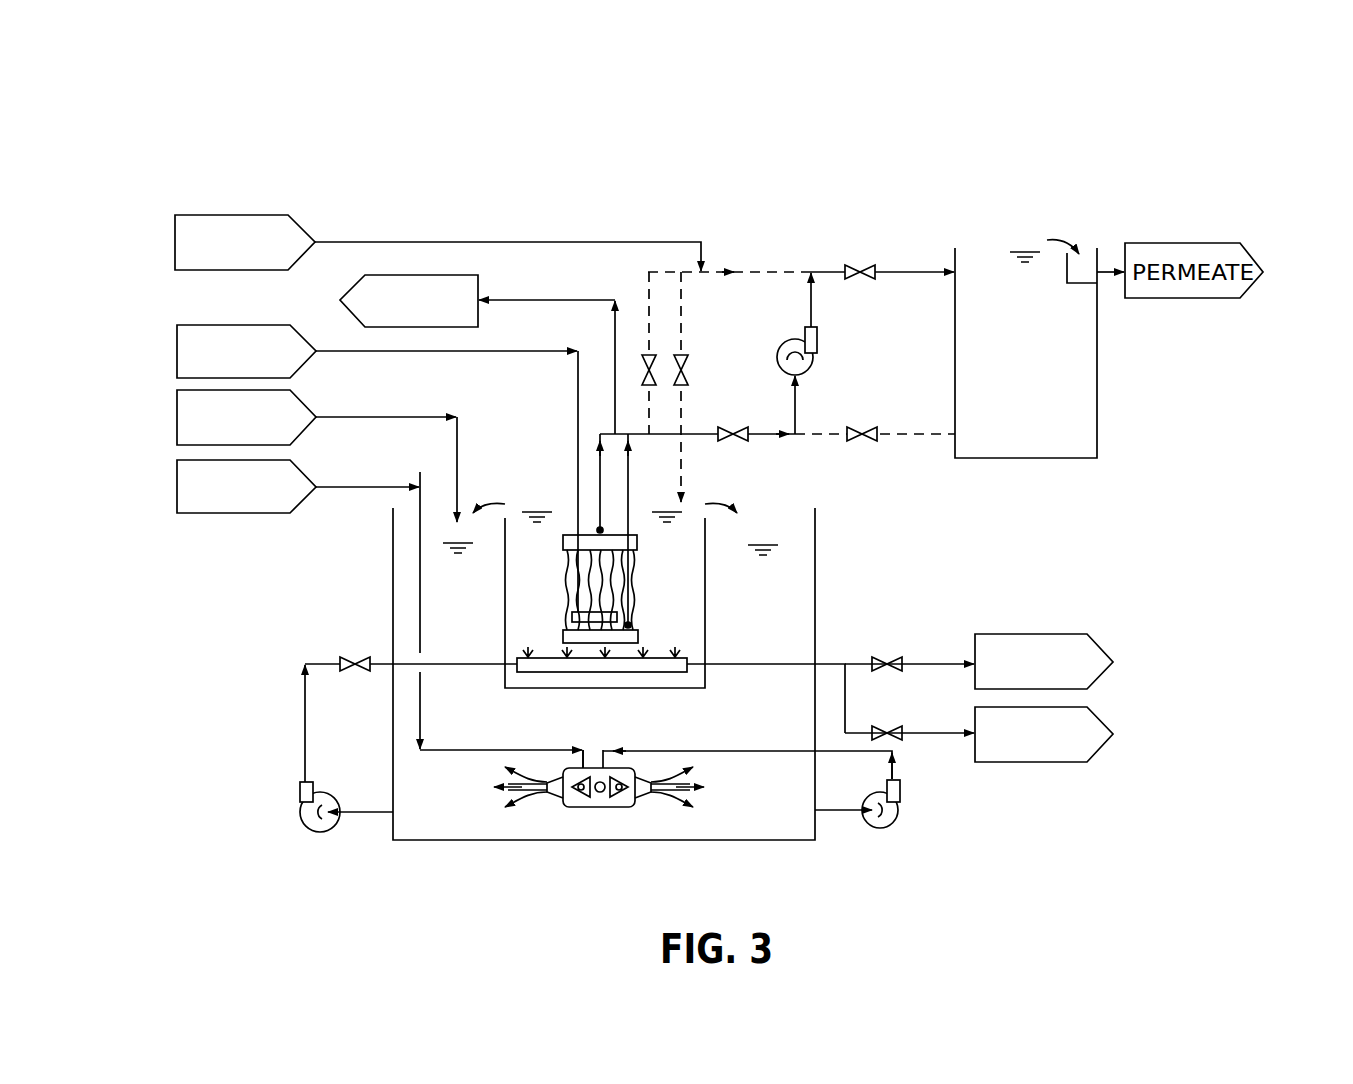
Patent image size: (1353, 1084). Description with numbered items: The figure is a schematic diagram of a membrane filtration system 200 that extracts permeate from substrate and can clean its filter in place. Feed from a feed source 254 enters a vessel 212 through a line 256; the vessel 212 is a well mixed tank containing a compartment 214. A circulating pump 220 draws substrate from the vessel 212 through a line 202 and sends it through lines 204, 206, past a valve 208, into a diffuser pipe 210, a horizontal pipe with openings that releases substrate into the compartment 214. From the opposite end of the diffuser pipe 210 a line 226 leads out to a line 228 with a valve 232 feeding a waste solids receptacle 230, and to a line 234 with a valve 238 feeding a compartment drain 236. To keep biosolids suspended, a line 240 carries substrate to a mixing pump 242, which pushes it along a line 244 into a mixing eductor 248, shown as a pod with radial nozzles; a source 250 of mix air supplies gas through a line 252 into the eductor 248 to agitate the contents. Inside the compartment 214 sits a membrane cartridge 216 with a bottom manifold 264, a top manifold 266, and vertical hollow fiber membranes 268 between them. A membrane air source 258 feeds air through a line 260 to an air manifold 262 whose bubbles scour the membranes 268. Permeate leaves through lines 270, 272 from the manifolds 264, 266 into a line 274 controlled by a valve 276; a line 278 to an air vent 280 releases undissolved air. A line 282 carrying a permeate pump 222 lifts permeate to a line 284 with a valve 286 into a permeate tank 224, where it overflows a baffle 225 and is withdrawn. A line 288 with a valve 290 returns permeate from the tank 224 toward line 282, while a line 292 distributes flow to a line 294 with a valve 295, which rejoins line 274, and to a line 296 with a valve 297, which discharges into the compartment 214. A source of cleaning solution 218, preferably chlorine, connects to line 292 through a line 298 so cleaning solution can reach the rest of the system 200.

The system 200 is at (1266, 194).
The line 202 is at (362, 815).
The line 204 is at (303, 730).
The line 206 is at (305, 662).
The valve 208 is at (353, 657).
The diffuser pipe 210 is at (625, 673).
The vessel 212 is at (816, 525).
The compartment 214 is at (707, 650).
The membrane cartridge 216 is at (632, 572).
The source of cleaning solution 218 is at (245, 242).
The circulating pump 220 is at (298, 823).
The permeate pump 222 is at (814, 349).
The permeate tank 224 is at (1039, 353).
The baffle 225 is at (1082, 286).
The line 226 is at (765, 667).
The line 228 is at (938, 660).
The waste solids receptacle 230 is at (1044, 661).
The valve 232 is at (884, 657).
The line 234 is at (934, 736).
The compartment drain 236 is at (1044, 734).
The valve 238 is at (875, 742).
The line 240 is at (840, 813).
The mixing pump 242 is at (900, 818).
The line 244 is at (753, 754).
The mixing eductor 248 is at (598, 808).
The source of mix air 250 is at (246, 486).
The line 252 is at (421, 585).
The feed source 254 is at (246, 417).
The line 256 is at (460, 430).
The membrane air source 258 is at (246, 351).
The line 260 is at (577, 378).
The air manifold 262 is at (572, 614).
The bottom manifold 264 is at (563, 636).
The top manifold 266 is at (638, 543).
The hollow fiber membranes 268 is at (633, 594).
The line 270 is at (630, 468).
The line 272 is at (598, 470).
The line 274 is at (663, 432).
The valve 276 is at (745, 441).
The line 278 is at (533, 297).
The air vent 280 is at (409, 301).
The line 282 is at (797, 398).
The line 284 is at (912, 270).
The valve 286 is at (855, 265).
The line 288 is at (932, 432).
The valve 290 is at (858, 442).
The line 292 is at (782, 270).
The line 294 is at (648, 273).
The valve 295 is at (648, 366).
The line 296 is at (683, 303).
The valve 297 is at (690, 374).
The line 298 is at (470, 240).